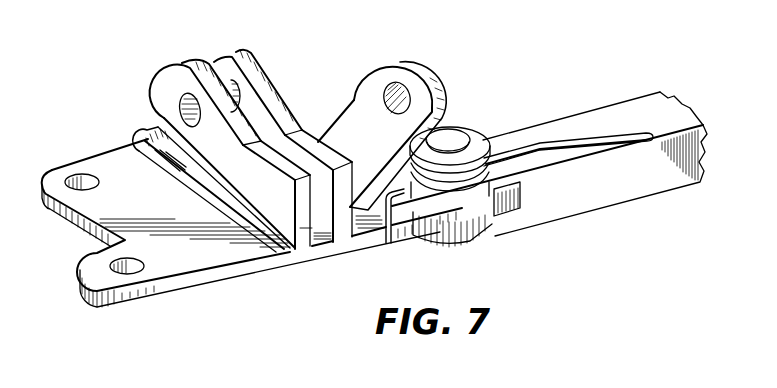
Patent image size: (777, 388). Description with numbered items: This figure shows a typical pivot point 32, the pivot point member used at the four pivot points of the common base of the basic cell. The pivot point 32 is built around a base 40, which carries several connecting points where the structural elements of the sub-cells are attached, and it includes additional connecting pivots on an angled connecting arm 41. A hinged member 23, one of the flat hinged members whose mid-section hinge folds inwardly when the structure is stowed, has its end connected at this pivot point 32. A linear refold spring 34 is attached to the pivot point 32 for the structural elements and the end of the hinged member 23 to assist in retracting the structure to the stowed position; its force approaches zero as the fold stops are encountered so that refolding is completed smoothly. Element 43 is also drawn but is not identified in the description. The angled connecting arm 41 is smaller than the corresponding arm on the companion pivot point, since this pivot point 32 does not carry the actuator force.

The pivot point 32 is at (155, 78).
The base 40 is at (94, 166).
The angled connecting arm 41 is at (198, 190).
The clevis lugs 43 is at (264, 62).
The linear refold spring 34 is at (509, 146).
The hinged member 23 is at (592, 117).